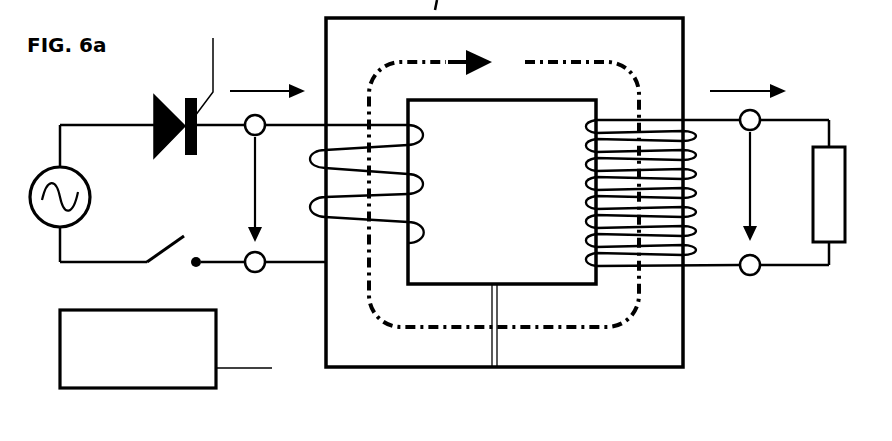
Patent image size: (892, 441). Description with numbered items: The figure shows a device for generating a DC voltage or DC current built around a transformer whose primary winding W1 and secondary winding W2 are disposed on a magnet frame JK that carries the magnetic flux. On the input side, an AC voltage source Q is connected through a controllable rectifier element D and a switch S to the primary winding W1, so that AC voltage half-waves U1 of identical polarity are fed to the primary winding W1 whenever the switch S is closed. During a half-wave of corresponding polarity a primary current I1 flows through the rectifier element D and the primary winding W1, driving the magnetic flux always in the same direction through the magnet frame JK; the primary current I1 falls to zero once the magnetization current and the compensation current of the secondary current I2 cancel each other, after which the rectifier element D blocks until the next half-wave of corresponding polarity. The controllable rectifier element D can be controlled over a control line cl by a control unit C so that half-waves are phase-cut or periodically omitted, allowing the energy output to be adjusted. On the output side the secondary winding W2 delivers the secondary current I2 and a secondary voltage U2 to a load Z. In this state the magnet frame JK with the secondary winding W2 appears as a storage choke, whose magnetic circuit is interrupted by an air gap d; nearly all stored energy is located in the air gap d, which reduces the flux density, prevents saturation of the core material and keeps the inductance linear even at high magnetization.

The rectifier element D is at (157, 124).
The control line cl is at (232, 203).
The AC voltage source Q is at (69, 195).
The switch S is at (174, 234).
The control unit C is at (138, 349).
The primary current I1 is at (280, 80).
The AC voltage half-waves U1 is at (292, 199).
The primary winding W1 is at (391, 184).
The secondary winding W2 is at (614, 193).
The secondary current I2 is at (754, 80).
The secondary voltage U2 is at (788, 199).
The load Z is at (833, 307).
The magnet frame JK is at (667, 338).
The air gap d is at (497, 370).